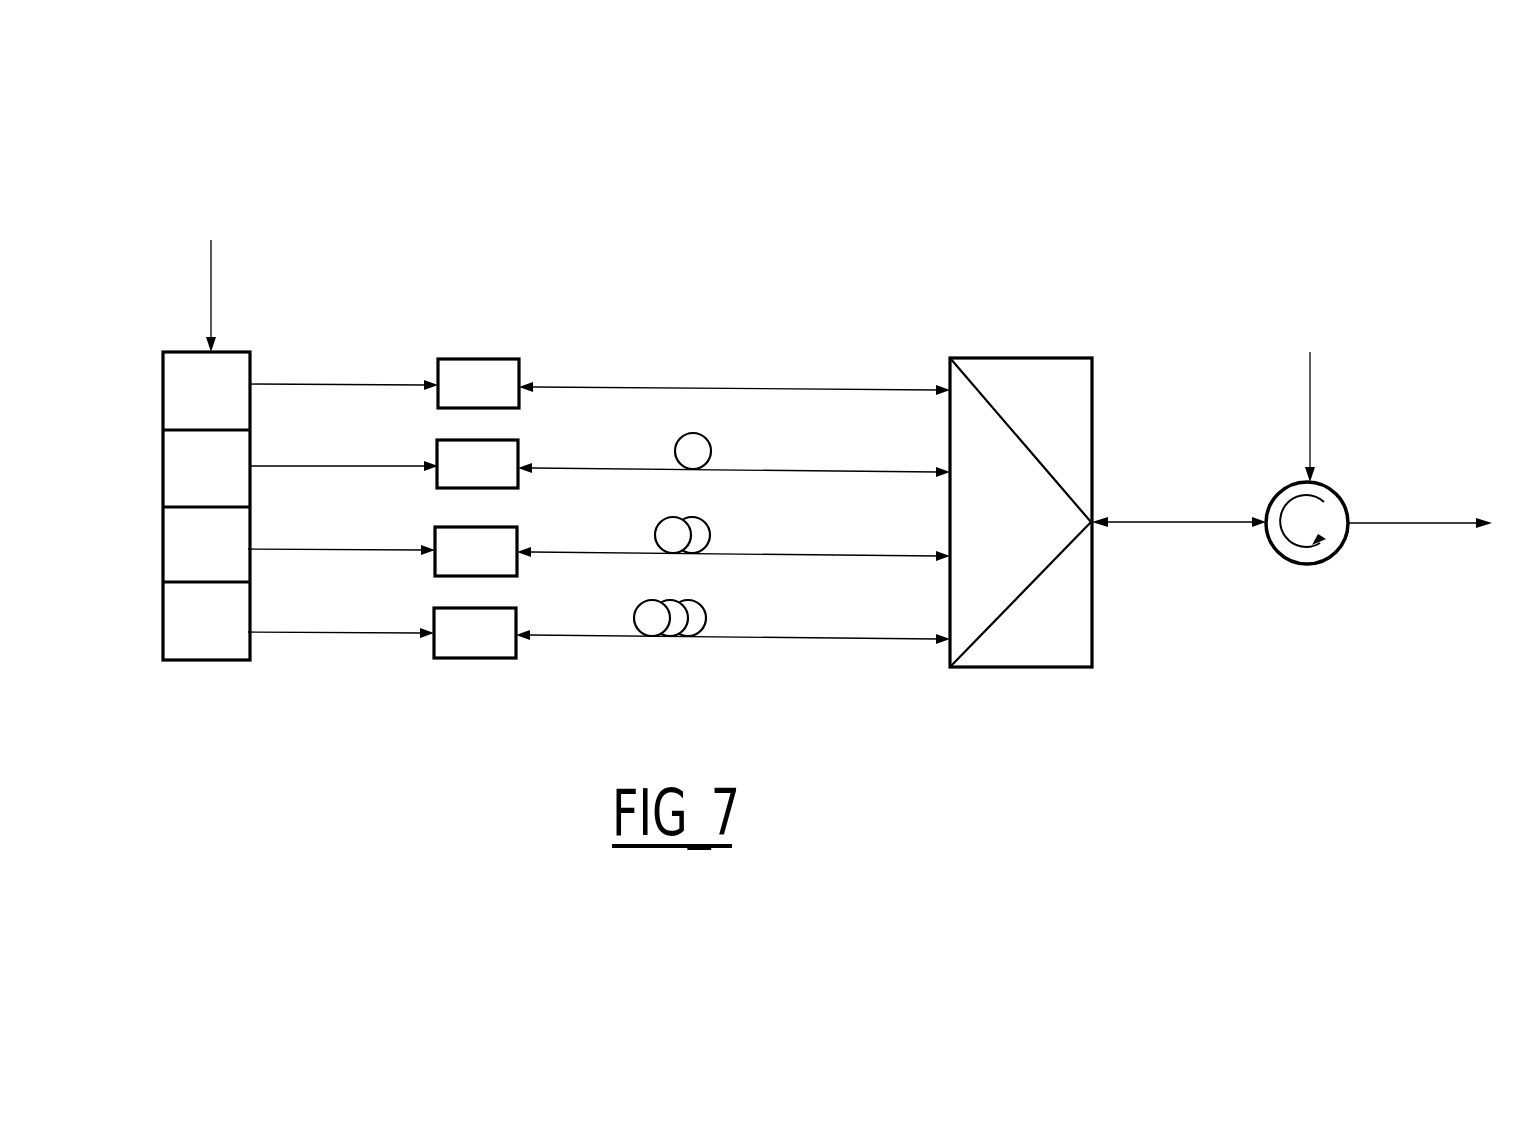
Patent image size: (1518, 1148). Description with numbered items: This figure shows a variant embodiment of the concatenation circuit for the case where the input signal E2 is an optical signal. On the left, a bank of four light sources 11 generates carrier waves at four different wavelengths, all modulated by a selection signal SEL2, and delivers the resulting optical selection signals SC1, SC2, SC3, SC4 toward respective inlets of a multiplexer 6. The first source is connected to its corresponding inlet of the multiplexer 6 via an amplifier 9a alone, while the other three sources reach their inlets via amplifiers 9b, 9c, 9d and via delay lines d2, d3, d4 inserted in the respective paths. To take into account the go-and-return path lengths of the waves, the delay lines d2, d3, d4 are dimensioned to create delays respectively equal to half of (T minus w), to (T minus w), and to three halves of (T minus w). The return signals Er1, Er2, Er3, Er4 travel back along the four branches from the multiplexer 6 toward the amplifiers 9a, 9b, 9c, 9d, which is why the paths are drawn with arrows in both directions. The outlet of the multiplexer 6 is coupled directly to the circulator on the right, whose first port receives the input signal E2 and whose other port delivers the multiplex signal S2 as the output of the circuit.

The light sources 11 is at (222, 661).
The selection signal SEL2 is at (219, 278).
The optical selection signal SC1 is at (336, 384).
The optical selection signal SC2 is at (325, 466).
The optical selection signal SC3 is at (328, 549).
The optical selection signal SC4 is at (330, 632).
The amplifier 9a is at (497, 359).
The amplifier 9b is at (518, 446).
The amplifier 9c is at (516, 534).
The amplifier 9d is at (515, 612).
The return input 1 Er1 is at (879, 388).
The return input 2 Er2 is at (858, 471).
The return input 3 Er3 is at (860, 555).
The return input 4 Er4 is at (860, 639).
The delay line d2 is at (708, 440).
The delay line d3 is at (706, 523).
The delay line d4 is at (702, 606).
The multiplexer 6 is at (1028, 358).
The input signal E2 is at (1309, 396).
The multiplex signal S2 is at (1424, 504).